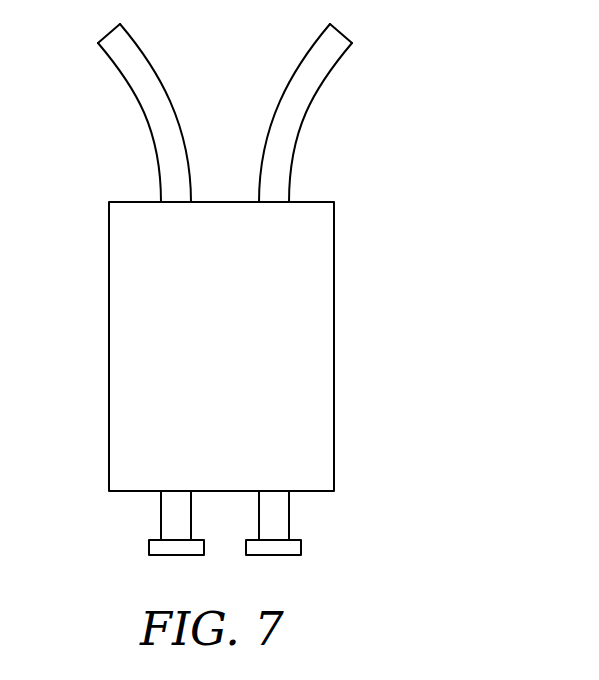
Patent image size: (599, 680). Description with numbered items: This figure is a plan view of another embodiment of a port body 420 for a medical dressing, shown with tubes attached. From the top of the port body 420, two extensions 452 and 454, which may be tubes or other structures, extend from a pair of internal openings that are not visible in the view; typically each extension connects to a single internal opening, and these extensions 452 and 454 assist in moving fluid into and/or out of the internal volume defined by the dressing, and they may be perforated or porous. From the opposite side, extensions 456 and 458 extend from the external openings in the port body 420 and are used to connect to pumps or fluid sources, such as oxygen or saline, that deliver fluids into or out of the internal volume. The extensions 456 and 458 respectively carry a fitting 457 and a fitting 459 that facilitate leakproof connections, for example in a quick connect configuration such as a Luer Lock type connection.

The port body 420 is at (409, 75).
The extension 452 is at (137, 100).
The extension 454 is at (315, 100).
The extension 456 is at (161, 520).
The fitting 457 is at (163, 556).
The extension 458 is at (289, 517).
The fitting 459 is at (285, 556).